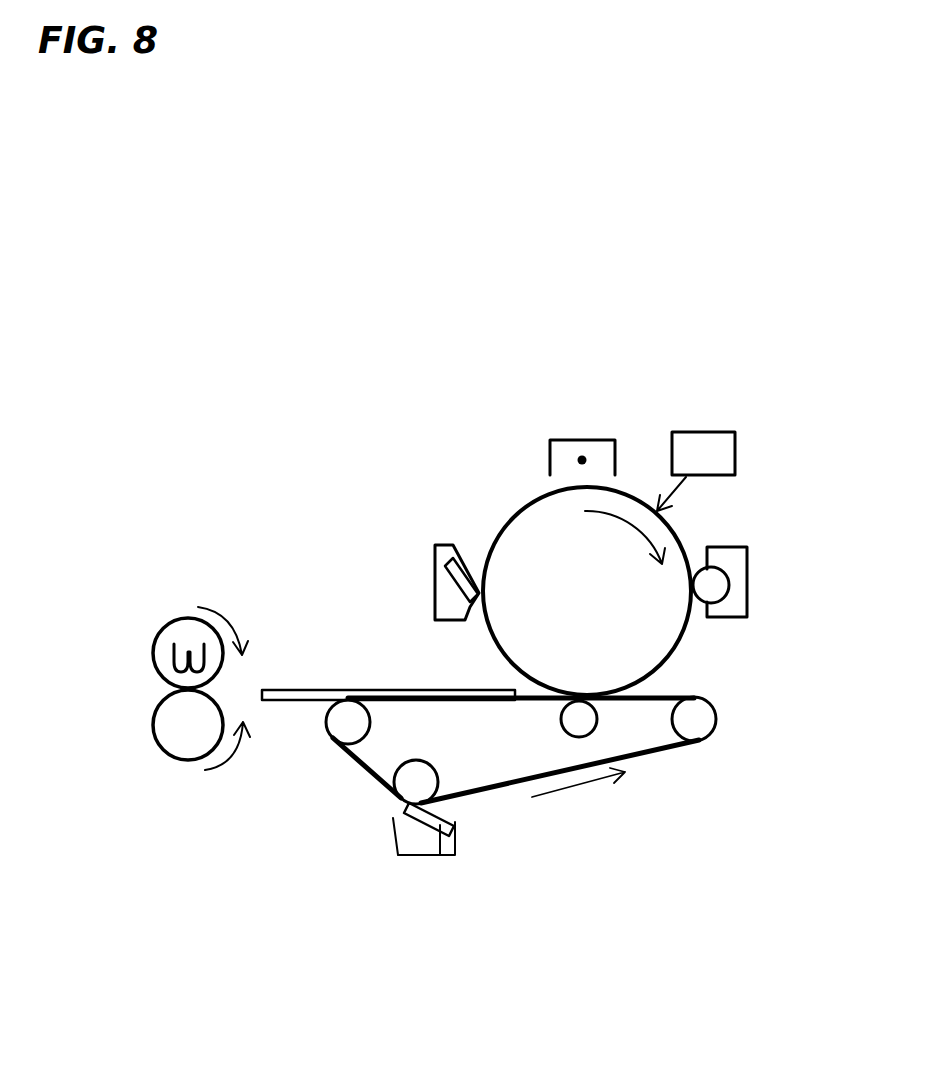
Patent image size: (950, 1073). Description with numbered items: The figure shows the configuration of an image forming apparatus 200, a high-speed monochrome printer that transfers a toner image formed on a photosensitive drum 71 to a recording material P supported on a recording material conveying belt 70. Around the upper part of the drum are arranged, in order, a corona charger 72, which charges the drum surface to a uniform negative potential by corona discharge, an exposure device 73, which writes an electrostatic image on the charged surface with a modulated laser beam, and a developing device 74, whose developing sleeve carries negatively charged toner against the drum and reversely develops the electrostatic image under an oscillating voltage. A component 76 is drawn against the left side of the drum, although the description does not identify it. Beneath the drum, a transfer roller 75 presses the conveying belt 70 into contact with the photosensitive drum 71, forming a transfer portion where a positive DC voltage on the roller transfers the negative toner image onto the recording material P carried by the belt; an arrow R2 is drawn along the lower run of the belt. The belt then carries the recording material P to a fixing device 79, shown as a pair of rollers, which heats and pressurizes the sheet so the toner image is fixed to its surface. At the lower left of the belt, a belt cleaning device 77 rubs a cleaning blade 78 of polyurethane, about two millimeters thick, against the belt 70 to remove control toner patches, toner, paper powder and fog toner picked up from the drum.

The image forming apparatus 200 is at (408, 394).
The recording material conveying belt 70 is at (668, 752).
The photosensitive drum 71 is at (685, 634).
The corona charger 72 is at (600, 438).
The exposure device 73 is at (707, 430).
The developing device 74 is at (725, 545).
The transfer roller 75 is at (556, 723).
The drum cleaner 76 is at (436, 545).
The belt cleaning device 77 is at (405, 857).
The cleaning blade 78 is at (440, 857).
The fixing device 79 is at (100, 553).
The recording material P is at (328, 690).
The belt rotation direction R2 is at (578, 791).